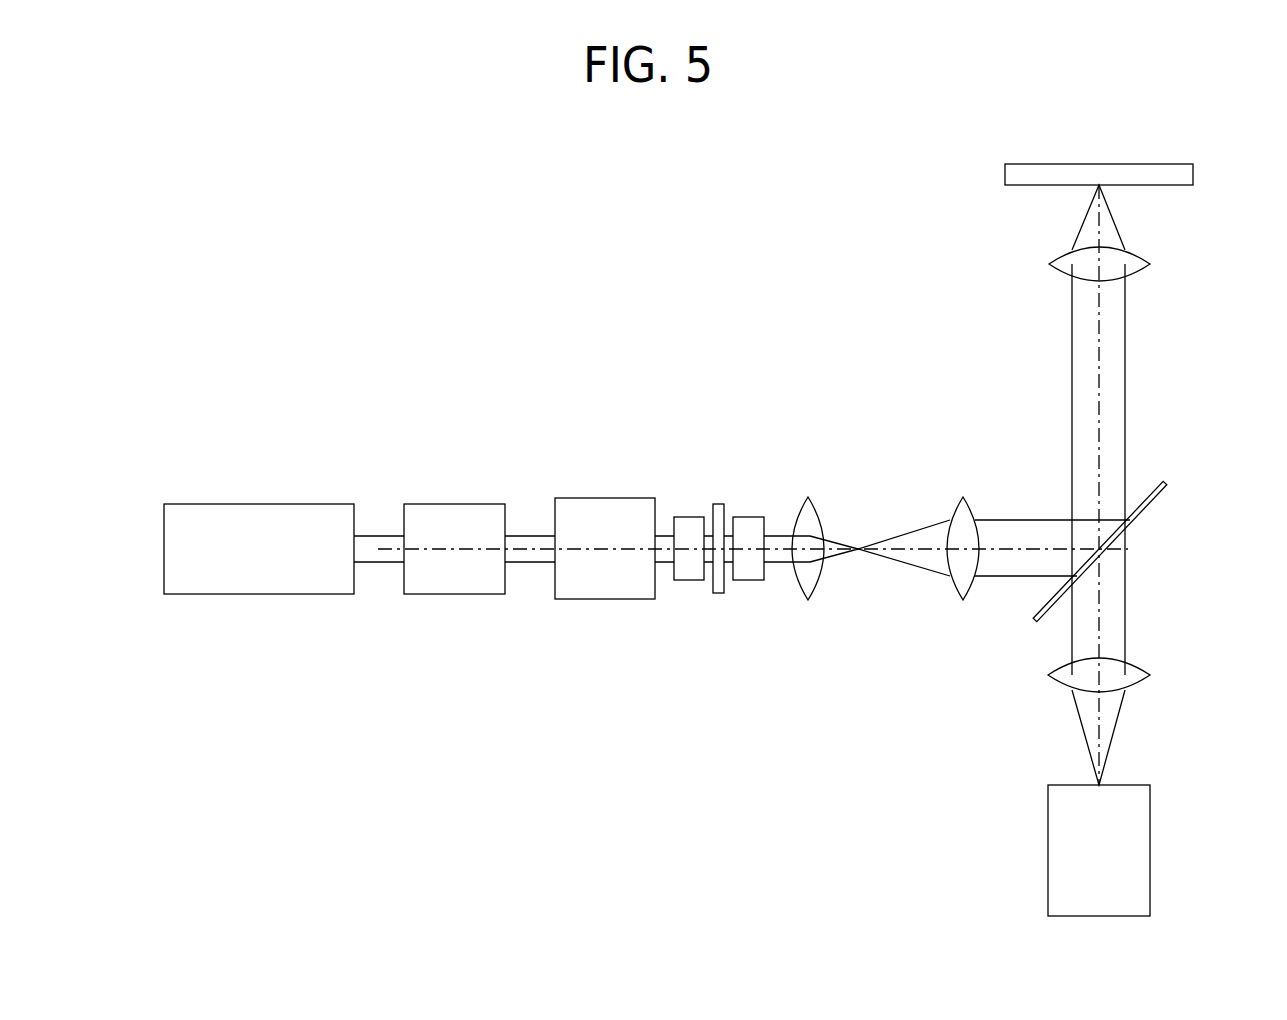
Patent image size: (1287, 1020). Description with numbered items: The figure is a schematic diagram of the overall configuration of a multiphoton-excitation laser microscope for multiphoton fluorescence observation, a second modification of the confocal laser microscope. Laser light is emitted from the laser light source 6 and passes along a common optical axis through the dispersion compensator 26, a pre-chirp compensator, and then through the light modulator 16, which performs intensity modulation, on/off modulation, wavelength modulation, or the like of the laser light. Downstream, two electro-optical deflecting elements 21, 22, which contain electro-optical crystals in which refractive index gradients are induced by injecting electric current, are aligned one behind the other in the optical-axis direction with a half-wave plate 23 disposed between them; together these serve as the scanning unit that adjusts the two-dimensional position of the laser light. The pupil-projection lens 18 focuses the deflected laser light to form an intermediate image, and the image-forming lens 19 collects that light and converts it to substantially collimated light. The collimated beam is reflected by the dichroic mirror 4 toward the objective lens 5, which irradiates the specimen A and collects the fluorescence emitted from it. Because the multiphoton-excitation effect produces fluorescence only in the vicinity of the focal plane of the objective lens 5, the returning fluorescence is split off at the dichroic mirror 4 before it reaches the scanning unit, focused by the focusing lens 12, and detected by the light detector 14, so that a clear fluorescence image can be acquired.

The observation laser light source 6 is at (243, 594).
The dispersion compensator 26 is at (462, 594).
The light modulator 16 is at (600, 599).
The electro-optical deflecting element 21 is at (688, 516).
The half-wave plate 23 is at (718, 503).
The electro-optical deflecting element 22 is at (750, 516).
The pupil-projection lens 18 is at (808, 600).
The image-forming lens 19 is at (963, 600).
The dichroic mirror 4 is at (1152, 502).
The objective lens 5 is at (1049, 264).
The specimen A is at (1005, 172).
The focusing lens 12 is at (1150, 675).
The light detector 14 is at (1150, 817).